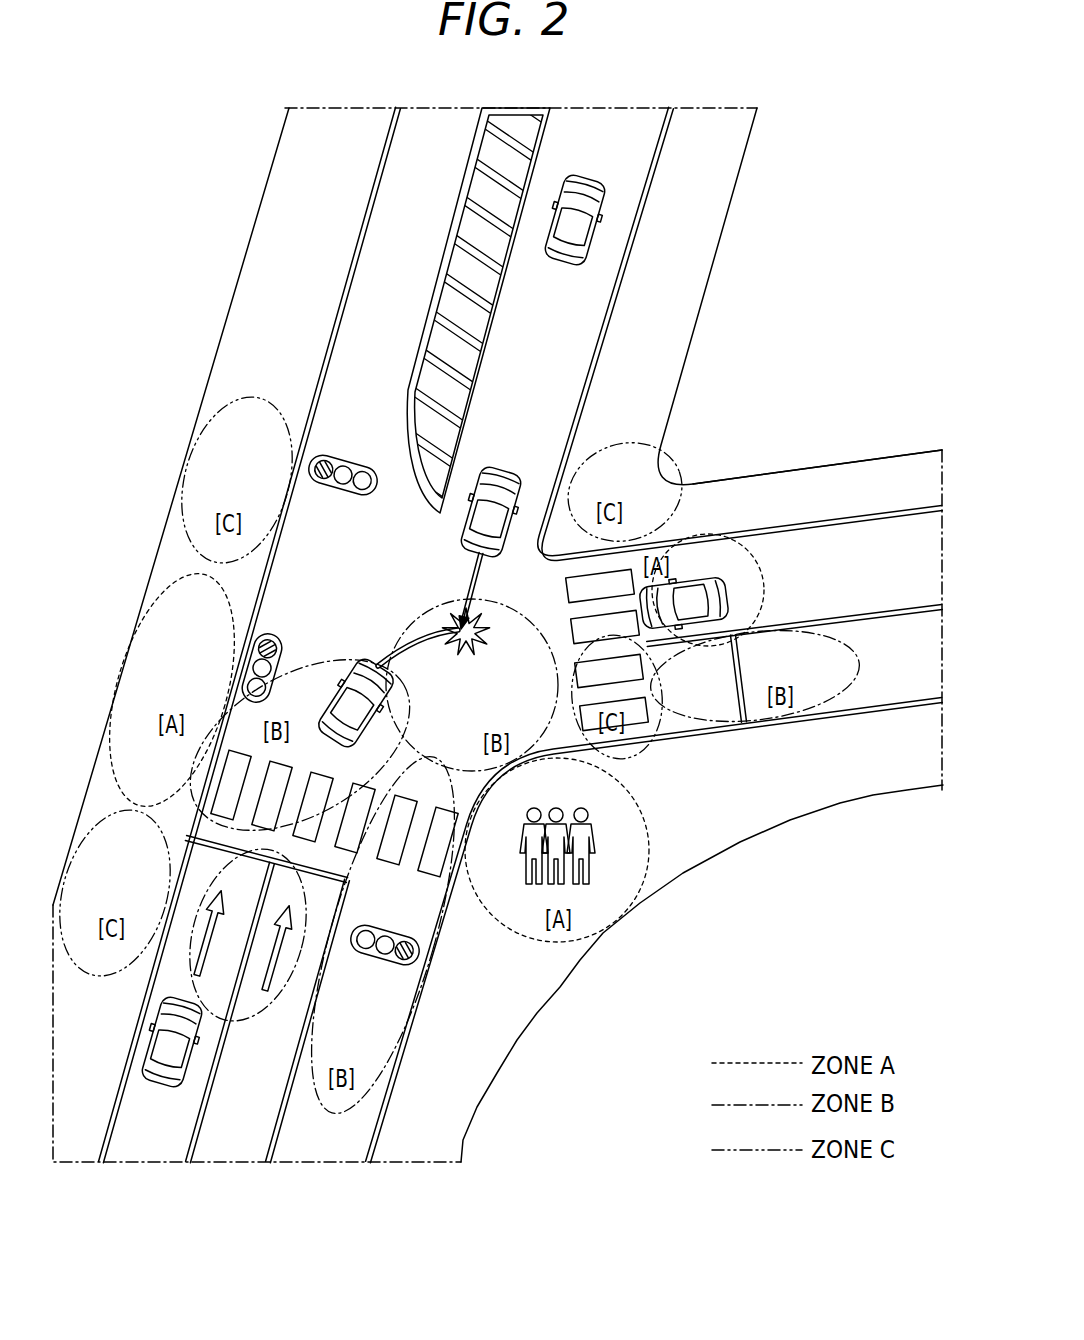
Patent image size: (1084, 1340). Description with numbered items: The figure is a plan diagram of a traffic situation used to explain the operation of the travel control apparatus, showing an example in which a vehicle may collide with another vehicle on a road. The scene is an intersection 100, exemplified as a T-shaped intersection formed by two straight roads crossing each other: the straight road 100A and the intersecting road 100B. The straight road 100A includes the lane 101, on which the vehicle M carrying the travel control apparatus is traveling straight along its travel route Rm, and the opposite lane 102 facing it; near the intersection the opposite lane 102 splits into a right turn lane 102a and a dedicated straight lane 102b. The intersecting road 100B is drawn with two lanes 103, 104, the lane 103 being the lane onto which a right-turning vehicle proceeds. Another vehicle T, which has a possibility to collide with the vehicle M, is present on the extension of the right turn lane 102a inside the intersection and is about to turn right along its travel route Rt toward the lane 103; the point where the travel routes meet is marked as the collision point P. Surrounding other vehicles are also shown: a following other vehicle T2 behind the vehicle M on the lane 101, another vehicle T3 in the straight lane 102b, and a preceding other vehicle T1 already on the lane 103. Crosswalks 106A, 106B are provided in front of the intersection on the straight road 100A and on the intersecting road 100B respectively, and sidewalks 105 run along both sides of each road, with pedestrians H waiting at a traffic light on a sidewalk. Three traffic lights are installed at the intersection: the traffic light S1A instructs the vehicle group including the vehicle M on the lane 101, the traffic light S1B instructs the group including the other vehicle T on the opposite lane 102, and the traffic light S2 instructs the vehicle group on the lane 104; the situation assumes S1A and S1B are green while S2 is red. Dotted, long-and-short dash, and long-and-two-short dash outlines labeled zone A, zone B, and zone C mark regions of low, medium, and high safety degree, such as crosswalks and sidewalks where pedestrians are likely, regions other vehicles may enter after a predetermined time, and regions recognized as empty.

The intersection 100 is at (145, 362).
The straight road 100A is at (327, 1236).
The intersecting road 100B is at (920, 420).
The lane 101 is at (567, 345).
The opposite lane 102 is at (242, 1205).
The right turn lane 102a is at (228, 1147).
The straight lane 102b is at (150, 1150).
The lane 103 is at (822, 540).
The lane 104 is at (899, 630).
The sidewalks 105 is at (253, 240).
The crosswalk 106A is at (423, 877).
The crosswalk 106B is at (638, 703).
The vehicle M is at (498, 495).
The other vehicle to collide T is at (384, 697).
The preceding other vehicle T1 is at (740, 577).
The following other vehicle T2 is at (588, 180).
The other vehicle T3 is at (157, 1088).
The pedestrians H is at (594, 855).
The collision point P is at (475, 648).
The travel route Rt is at (400, 647).
The travel route Rm is at (481, 572).
The traffic light S1A is at (410, 960).
The traffic light S1B is at (335, 458).
The traffic light S2 is at (270, 640).